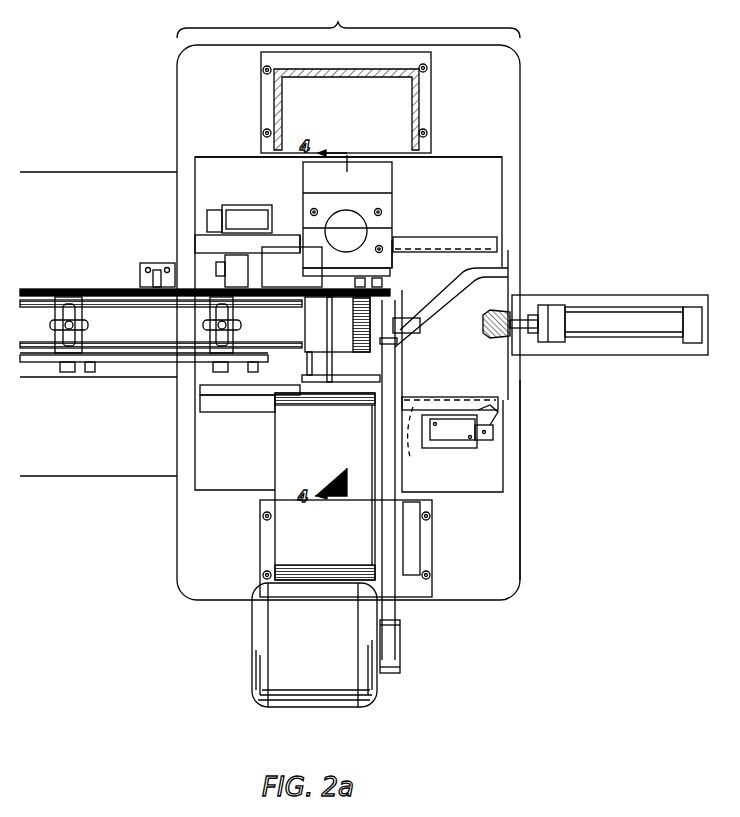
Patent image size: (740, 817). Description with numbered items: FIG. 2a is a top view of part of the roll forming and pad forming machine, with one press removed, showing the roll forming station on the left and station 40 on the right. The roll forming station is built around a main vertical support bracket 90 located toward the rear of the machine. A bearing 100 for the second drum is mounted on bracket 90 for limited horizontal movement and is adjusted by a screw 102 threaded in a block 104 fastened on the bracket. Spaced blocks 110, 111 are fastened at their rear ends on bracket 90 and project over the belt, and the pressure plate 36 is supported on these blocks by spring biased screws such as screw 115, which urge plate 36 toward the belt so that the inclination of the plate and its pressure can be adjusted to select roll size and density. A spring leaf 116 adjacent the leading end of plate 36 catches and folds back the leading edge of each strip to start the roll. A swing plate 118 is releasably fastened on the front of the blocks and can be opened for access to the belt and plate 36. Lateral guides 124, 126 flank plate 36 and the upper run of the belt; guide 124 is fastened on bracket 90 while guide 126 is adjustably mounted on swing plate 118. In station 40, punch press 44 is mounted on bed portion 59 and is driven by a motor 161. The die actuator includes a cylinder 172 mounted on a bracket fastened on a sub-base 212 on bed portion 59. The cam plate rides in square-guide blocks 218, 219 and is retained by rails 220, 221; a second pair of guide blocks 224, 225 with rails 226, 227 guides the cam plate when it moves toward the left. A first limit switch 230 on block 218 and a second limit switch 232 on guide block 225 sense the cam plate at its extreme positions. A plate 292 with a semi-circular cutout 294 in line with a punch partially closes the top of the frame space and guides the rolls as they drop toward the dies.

The station 40 is at (348, 301).
The bed portion 59 is at (510, 525).
The semi-circular cutout 294 is at (341, 253).
The plate 292 is at (388, 240).
The square-guide block 219 is at (455, 240).
The rail 221 is at (440, 252).
The cylinder 172 is at (630, 315).
The second limit switch 232 is at (213, 210).
The rail 227 is at (292, 240).
The bearing 100 is at (278, 250).
The guide block 225 is at (258, 258).
The screw 102 is at (217, 277).
The block 104 is at (230, 282).
The main vertical support bracket 90 is at (40, 290).
The lateral guide 124 is at (130, 300).
The block 111 is at (78, 300).
The lateral guide 126 is at (110, 350).
The pressure plate 36 is at (138, 335).
The swing plate 118 is at (150, 360).
The spring leaf 116 is at (80, 325).
The block 110 is at (208, 318).
The spring biased screw 115 is at (236, 322).
The guide block 224 is at (255, 392).
The rail 226 is at (222, 405).
The punch press 44 is at (265, 455).
The sub-base 212 is at (492, 480).
The rail 220 is at (420, 397).
The first limit switch 230 is at (497, 437).
The square-guide block 218 is at (422, 439).
The motor 161 is at (290, 707).